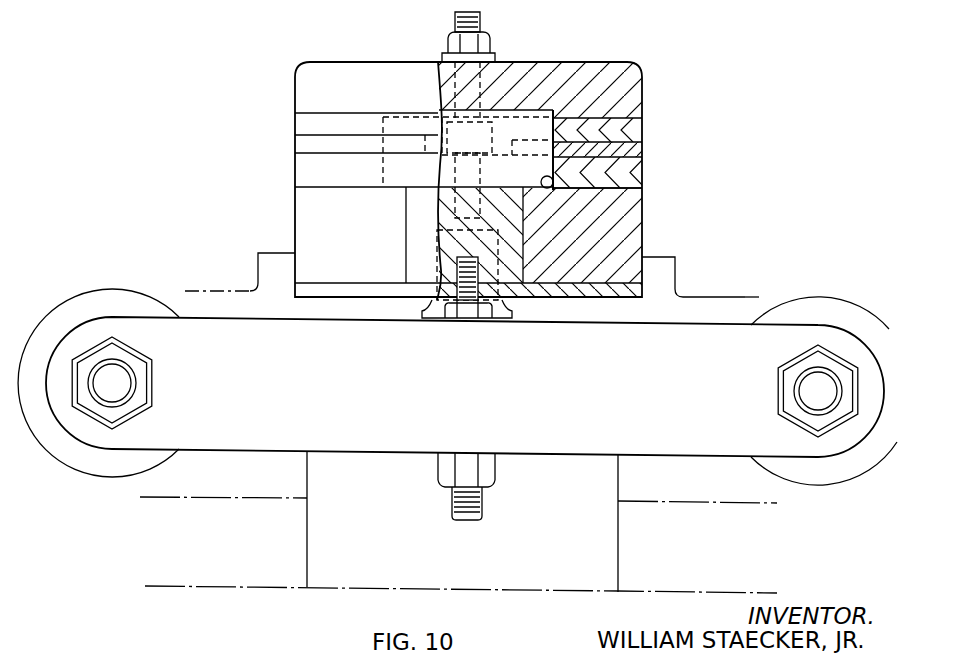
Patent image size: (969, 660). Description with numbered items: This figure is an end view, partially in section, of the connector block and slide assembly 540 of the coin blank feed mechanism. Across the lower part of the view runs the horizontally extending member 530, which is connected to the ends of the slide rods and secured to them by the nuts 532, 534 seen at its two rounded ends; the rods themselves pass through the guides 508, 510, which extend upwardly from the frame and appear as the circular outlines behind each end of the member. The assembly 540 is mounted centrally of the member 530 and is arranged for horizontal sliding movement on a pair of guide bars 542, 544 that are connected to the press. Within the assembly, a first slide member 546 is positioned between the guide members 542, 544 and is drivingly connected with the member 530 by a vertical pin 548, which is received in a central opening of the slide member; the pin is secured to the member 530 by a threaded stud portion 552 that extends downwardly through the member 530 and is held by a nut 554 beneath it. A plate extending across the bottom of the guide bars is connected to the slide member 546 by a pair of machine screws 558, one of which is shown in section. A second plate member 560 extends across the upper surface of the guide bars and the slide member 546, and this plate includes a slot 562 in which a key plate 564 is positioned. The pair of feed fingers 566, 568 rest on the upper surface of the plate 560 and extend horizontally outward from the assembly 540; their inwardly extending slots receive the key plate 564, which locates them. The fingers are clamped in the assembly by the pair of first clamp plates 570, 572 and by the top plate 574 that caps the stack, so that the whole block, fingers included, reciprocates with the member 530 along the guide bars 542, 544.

The connector block and slide assembly 540 is at (618, 45).
The top plate 574 is at (644, 86).
The first clamp plate 572 is at (644, 129).
The feed finger 568 is at (644, 151).
The second plate member 560 is at (644, 175).
The key plate 564 is at (553, 126).
The slot 562 is at (591, 196).
The first slide member 546 is at (518, 240).
The guide bar 544 is at (644, 239).
The first clamp plate 570 is at (300, 123).
The feed finger 566 is at (298, 144).
The guide bar 542 is at (302, 226).
The machine screw 558 is at (450, 322).
The vertical pin 548 is at (512, 307).
The horizontally extending member 530 is at (345, 455).
The guide 508 is at (110, 297).
The guide 510 is at (827, 302).
The nut 532 is at (153, 381).
The nut 534 is at (778, 390).
The nut 554 is at (497, 468).
The threaded stud portion 552 is at (484, 504).